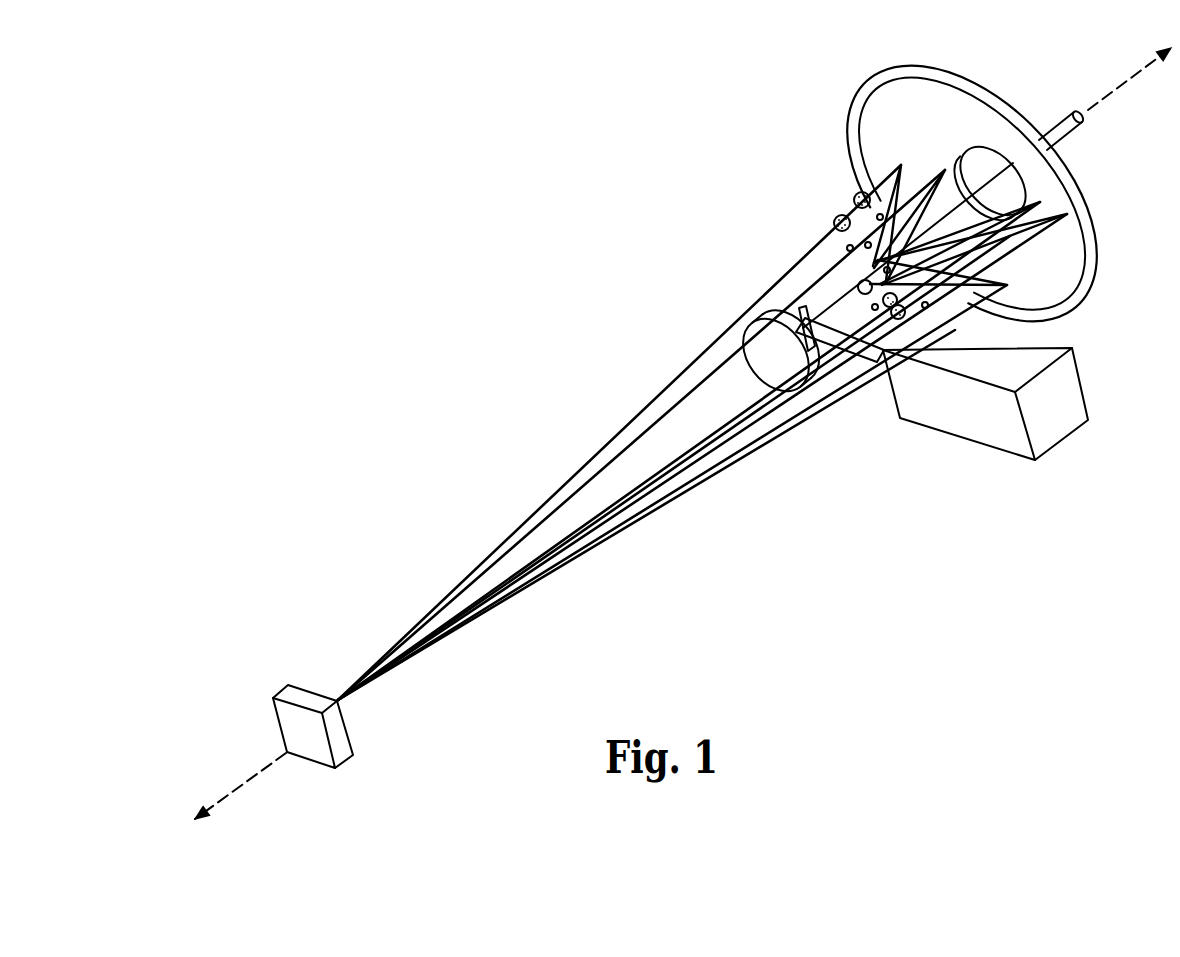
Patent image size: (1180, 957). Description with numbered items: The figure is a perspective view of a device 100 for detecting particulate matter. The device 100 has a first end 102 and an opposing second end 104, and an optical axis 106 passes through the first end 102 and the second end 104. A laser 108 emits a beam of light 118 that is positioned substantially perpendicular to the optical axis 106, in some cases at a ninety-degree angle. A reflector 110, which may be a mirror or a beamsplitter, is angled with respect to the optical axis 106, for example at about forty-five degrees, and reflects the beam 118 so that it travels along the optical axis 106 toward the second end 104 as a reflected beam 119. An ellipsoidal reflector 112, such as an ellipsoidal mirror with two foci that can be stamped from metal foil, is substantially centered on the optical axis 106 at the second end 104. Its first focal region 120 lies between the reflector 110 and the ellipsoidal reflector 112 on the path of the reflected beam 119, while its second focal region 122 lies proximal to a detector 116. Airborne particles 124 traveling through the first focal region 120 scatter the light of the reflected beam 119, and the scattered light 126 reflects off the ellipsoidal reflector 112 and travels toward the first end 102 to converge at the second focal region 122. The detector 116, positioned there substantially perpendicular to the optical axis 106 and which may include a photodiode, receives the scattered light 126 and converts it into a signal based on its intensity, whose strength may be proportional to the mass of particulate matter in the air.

The device 100 is at (378, 186).
The first end 102 is at (284, 372).
The second end 104 is at (628, 107).
The optical axis 106 is at (1120, 72).
The laser 108 is at (1015, 463).
The reflector 110 is at (802, 300).
The ellipsoidal reflector 112 is at (1085, 312).
The detector 116 is at (354, 745).
The beam of light 118 is at (857, 366).
The reflected beam 119 is at (1068, 144).
The first focal region 120 is at (856, 273).
The second focal region 122 is at (336, 688).
The airborne particles 124 is at (825, 201).
The scattered light 126 is at (918, 178).